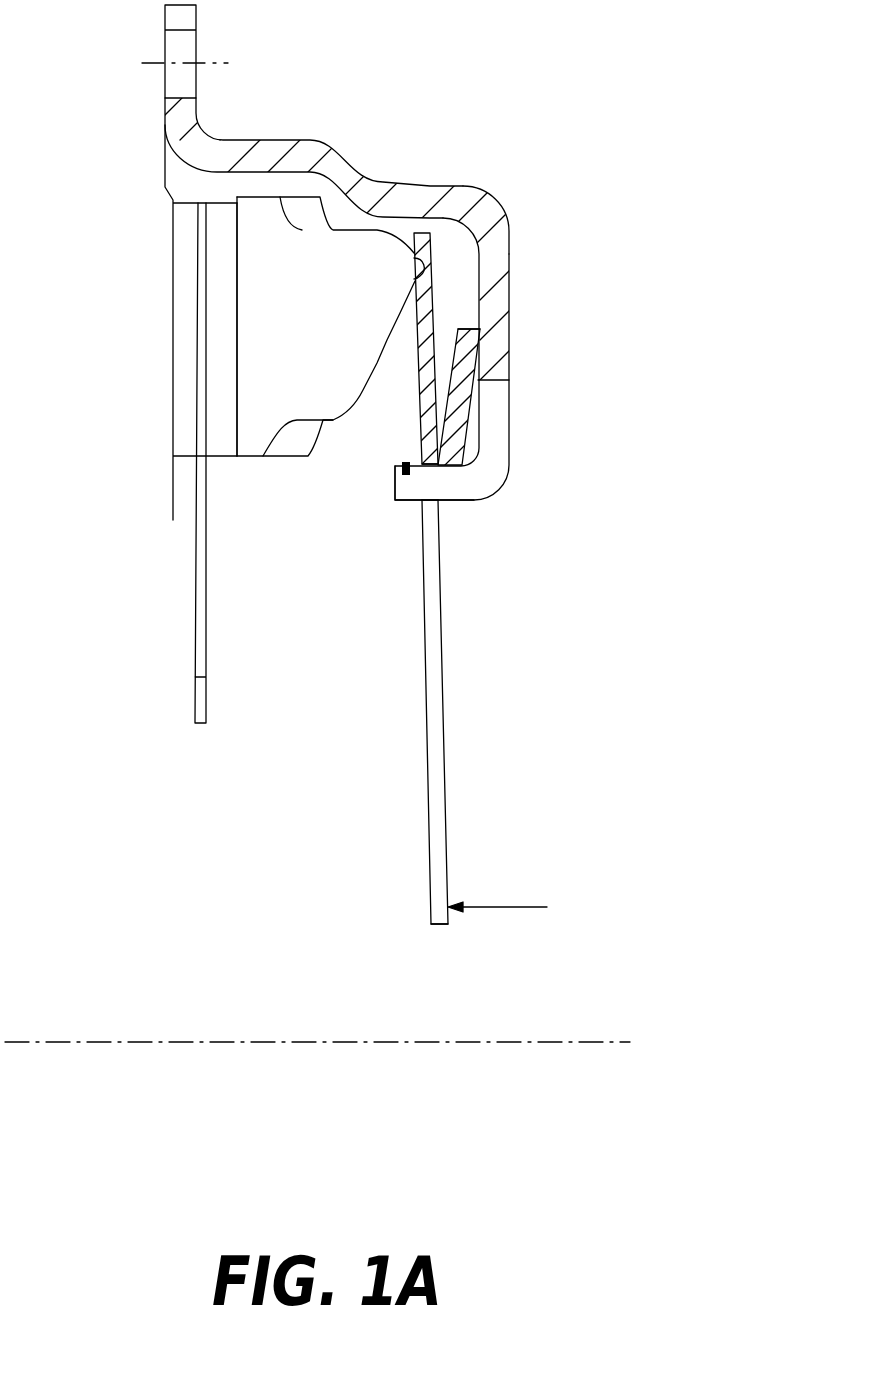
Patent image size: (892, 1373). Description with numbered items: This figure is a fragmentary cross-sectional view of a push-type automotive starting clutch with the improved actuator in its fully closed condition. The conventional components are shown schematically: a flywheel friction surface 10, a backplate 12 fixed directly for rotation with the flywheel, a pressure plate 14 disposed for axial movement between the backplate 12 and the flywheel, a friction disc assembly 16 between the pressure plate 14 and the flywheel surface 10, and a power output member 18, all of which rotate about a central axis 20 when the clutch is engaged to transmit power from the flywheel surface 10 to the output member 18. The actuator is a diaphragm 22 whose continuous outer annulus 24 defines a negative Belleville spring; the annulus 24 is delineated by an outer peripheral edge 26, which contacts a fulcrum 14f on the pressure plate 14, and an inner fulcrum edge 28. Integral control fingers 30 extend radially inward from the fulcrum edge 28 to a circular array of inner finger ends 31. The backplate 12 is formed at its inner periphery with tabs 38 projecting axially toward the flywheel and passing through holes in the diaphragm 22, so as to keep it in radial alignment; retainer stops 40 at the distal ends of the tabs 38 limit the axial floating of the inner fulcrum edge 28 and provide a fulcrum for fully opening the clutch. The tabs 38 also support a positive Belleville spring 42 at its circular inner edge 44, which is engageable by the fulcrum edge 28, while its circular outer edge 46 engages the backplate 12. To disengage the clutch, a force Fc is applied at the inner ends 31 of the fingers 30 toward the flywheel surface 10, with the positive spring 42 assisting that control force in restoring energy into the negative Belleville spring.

The flywheel friction surface 10 is at (173, 494).
The backplate 12 is at (400, 193).
The pressure plate 14 is at (340, 359).
The fulcrum 14f is at (414, 272).
The friction disc assembly 16 is at (214, 430).
The power output member 18 is at (203, 676).
The central axis 20 is at (550, 1042).
The diaphragm 22 is at (466, 601).
The outer annulus 24 is at (422, 318).
The outer peripheral edge 26 is at (452, 207).
The inner fulcrum edge 28 is at (436, 472).
The control fingers 30 is at (435, 778).
The inner finger ends 31 is at (441, 925).
The tabs 38 is at (405, 500).
The retainer stops 40 is at (402, 464).
The positive Belleville spring 42 is at (476, 380).
The inner edge 44 is at (476, 478).
The outer edge 46 is at (481, 329).